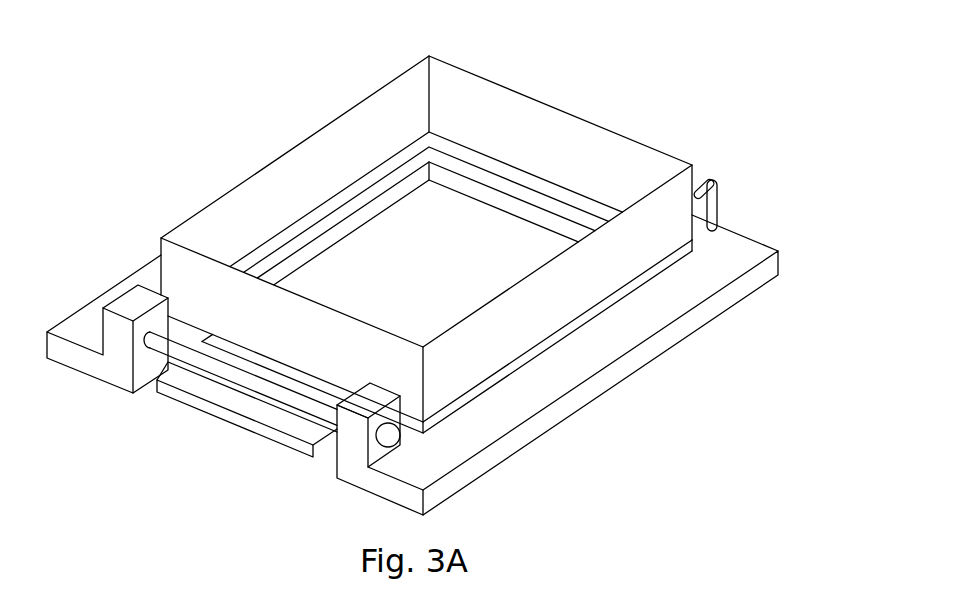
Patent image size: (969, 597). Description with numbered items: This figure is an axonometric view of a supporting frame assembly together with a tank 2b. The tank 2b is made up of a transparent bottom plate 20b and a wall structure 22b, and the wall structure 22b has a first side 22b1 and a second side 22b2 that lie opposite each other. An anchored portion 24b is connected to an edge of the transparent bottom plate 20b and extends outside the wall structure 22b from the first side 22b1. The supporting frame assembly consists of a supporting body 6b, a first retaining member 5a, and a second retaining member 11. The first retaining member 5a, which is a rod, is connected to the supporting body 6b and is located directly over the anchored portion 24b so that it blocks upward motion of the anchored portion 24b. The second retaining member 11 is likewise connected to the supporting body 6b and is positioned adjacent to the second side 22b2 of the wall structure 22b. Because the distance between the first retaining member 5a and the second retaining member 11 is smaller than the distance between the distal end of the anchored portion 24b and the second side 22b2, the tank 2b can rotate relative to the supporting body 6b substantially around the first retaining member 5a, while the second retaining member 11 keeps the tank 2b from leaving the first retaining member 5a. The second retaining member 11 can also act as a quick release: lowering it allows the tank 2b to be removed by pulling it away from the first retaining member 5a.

The tank 2b is at (815, 181).
The wall structure 22b is at (681, 208).
The first side 22b1 is at (178, 266).
The second side 22b2 is at (584, 90).
The transparent bottom plate 20b is at (700, 251).
The second retaining member 11 is at (712, 178).
The supporting body 6b is at (625, 372).
The first retaining member 5a is at (250, 377).
The anchored portion 24b is at (278, 435).